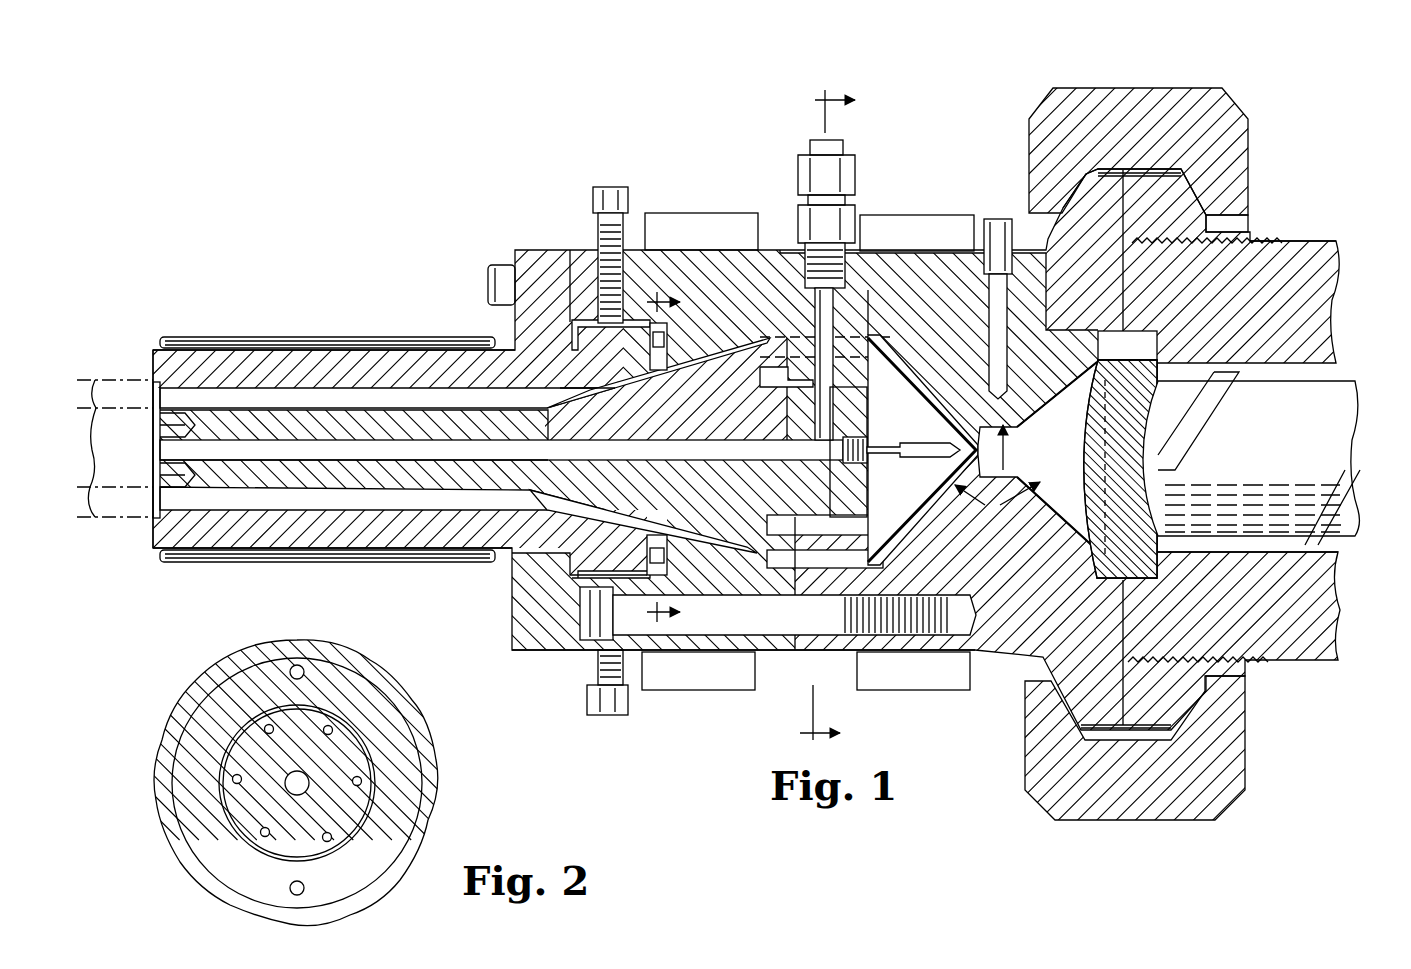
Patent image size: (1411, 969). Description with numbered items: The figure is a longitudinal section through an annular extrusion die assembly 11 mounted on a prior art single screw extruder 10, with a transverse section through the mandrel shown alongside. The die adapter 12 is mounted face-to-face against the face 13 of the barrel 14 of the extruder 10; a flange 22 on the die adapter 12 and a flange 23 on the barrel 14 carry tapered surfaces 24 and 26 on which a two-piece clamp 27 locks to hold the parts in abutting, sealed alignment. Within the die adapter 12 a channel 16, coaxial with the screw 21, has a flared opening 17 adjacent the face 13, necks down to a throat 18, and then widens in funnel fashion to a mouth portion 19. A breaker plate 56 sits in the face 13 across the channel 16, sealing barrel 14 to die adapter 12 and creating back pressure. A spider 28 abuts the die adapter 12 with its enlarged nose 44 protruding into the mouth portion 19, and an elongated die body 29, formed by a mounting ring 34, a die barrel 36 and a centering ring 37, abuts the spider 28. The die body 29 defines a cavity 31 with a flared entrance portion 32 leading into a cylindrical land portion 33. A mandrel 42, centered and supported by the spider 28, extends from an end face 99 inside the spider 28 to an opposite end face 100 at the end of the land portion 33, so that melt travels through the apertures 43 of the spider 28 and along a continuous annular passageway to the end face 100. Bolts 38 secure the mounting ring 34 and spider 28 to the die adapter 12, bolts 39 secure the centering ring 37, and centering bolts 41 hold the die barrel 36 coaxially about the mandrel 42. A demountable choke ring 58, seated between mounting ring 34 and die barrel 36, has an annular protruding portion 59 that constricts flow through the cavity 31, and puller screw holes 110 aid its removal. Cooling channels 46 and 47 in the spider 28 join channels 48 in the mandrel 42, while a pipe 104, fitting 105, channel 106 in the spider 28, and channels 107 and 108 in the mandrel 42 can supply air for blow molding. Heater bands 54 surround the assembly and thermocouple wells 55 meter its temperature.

In FIG. 1, the single screw extruder 10 is at (1280, 228).
In FIG. 1, the annular extrusion die assembly 11 is at (903, 205).
In FIG. 1, the die adapter 12 is at (1013, 652).
In FIG. 1, the face 13 is at (1123, 680).
In FIG. 1, the barrel 14 is at (1306, 662).
In FIG. 1, the channel 16 is at (997, 477).
In FIG. 1, the flared opening 17 is at (1085, 540).
In FIG. 1, the throat 18 is at (1000, 432).
In FIG. 1, the mouth portion 19 is at (905, 345).
In FIG. 1, the screw 21 is at (1350, 450).
In FIG. 1, the flange 22 is at (1087, 185).
In FIG. 1, the flange 23 is at (1163, 185).
In FIG. 1, the tapered surface 24 is at (1075, 228).
In FIG. 1, the tapered surface 26 is at (1190, 240).
In FIG. 1, the two-piece clamp 27 is at (1245, 128).
In FIG. 1, the spider 28 is at (800, 655).
In FIG. 1, the die body 29 is at (500, 567).
In FIG. 1, the cavity 31 is at (462, 400).
In FIG. 1, the entrance portion 32 is at (735, 345).
In FIG. 1, the land portion 33 is at (345, 395).
In FIG. 1, the mounting ring 34 is at (660, 258).
In FIG. 2, the mounting ring 34 is at (432, 770).
In FIG. 1, the die barrel 36 is at (268, 355).
In FIG. 1, the centering ring 37 is at (540, 262).
In FIG. 1, the bolts 38 is at (895, 650).
In FIG. 1, the bolts 39 is at (500, 275).
In FIG. 1, the centering bolts 41 is at (612, 195).
In FIG. 1, the mandrel 42 is at (388, 490).
In FIG. 1, the apertures 43 is at (827, 557).
In FIG. 1, the nose 44 is at (978, 428).
In FIG. 1, the cooling channel 46 is at (912, 490).
In FIG. 1, the cooling channels 47 is at (900, 455).
In FIG. 2, the channels 48 is at (360, 770).
In FIG. 1, the electrical resistance heater bands 54 is at (393, 340).
In FIG. 1, the wells 55 is at (985, 285).
In FIG. 1, the breaker plate 56 is at (1105, 345).
In FIG. 1, the choke ring 58 is at (657, 540).
In FIG. 2, the choke ring 58 is at (232, 690).
In FIG. 1, the annular protruding portion 59 is at (660, 385).
In FIG. 1, the end face 99 is at (865, 420).
In FIG. 1, the end face 100 is at (158, 430).
In FIG. 1, the pipe 104 is at (845, 148).
In FIG. 1, the fitting 105 is at (800, 177).
In FIG. 1, the channel 106 is at (838, 300).
In FIG. 1, the channel 107 is at (813, 412).
In FIG. 1, the channel 108 is at (695, 445).
In FIG. 1, the puller screw holes 110 is at (645, 340).
In FIG. 2, the puller screw holes 110 is at (295, 896).